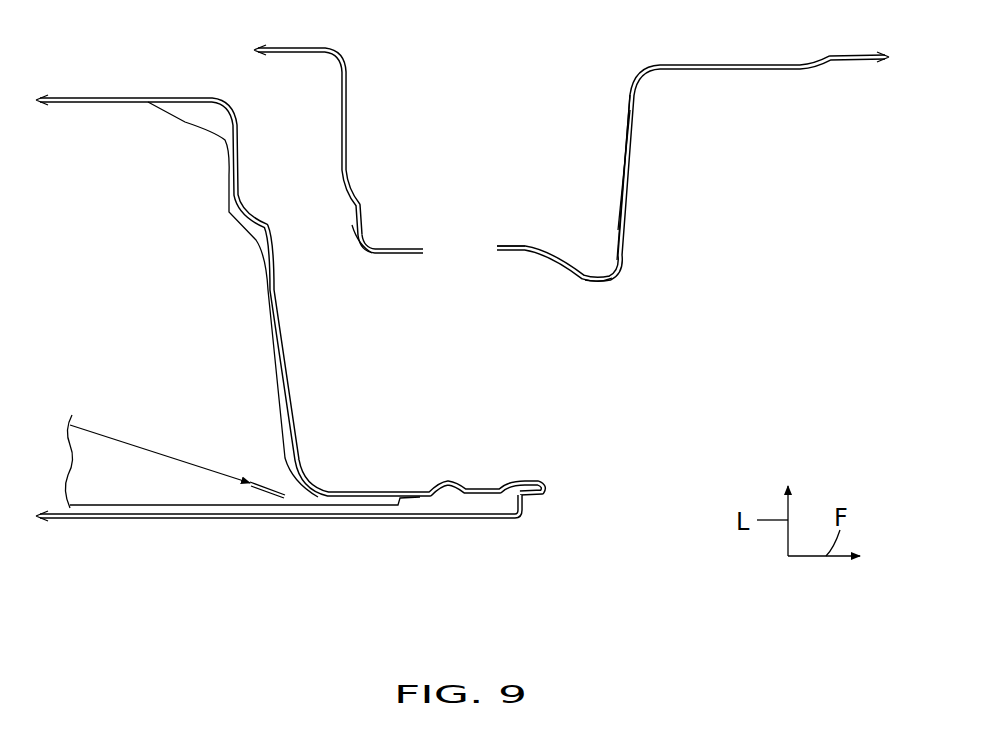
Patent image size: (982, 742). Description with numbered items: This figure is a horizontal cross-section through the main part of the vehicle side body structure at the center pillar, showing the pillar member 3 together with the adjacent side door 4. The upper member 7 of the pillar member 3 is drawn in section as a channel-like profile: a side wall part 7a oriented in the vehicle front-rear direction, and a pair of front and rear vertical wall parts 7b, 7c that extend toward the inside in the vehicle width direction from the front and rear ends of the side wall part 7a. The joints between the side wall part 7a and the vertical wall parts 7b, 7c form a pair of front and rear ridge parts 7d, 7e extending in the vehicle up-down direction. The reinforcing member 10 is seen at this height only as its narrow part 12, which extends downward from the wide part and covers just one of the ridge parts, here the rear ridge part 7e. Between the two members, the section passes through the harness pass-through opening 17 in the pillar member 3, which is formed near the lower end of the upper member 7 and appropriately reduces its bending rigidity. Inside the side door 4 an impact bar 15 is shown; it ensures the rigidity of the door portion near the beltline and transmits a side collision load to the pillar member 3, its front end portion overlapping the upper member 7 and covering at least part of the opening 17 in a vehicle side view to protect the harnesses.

The pillar member 3 is at (626, 256).
The side door 4 is at (175, 522).
The upper member 7 is at (529, 259).
The side wall part 7a is at (515, 246).
The front vertical wall part 7b is at (626, 156).
The rear vertical wall part 7c is at (348, 132).
The front ridge part 7d is at (612, 280).
The rear ridge part 7e is at (368, 236).
The reinforcing member 10 is at (289, 296).
The narrow part 12 is at (370, 252).
The impact bar 15 is at (121, 437).
The harness pass-through opening 17 is at (460, 245).